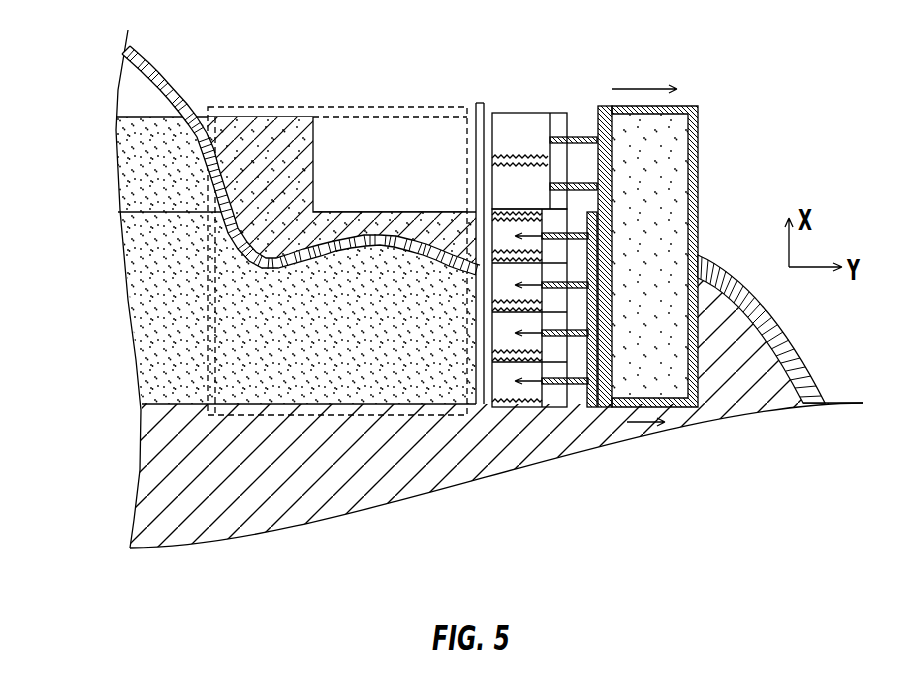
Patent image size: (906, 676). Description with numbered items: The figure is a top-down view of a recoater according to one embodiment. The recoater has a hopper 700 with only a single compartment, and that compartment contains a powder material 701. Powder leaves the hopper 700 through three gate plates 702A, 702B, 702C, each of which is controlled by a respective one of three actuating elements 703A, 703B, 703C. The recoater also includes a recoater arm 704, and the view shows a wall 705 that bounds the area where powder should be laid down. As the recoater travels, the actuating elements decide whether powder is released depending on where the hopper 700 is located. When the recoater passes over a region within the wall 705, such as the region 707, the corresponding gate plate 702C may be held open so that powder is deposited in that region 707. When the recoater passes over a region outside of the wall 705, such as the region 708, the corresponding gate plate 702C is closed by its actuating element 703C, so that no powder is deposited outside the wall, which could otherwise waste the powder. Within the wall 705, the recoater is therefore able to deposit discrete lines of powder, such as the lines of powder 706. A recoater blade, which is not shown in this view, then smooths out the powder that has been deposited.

The hopper 700 is at (694, 224).
The powder material 701 is at (668, 163).
The gate plate 702A is at (592, 407).
The gate plate 702B is at (555, 137).
The gate plate 702C is at (594, 212).
The actuating element 703A is at (513, 407).
The actuating element 703B is at (483, 110).
The actuating element 703C is at (512, 113).
The recoater arm 704 is at (480, 407).
The wall 705 is at (161, 73).
The discrete lines of powder 706 is at (230, 318).
The region within the wall 707 is at (138, 162).
The region outside the wall 708 is at (298, 123).